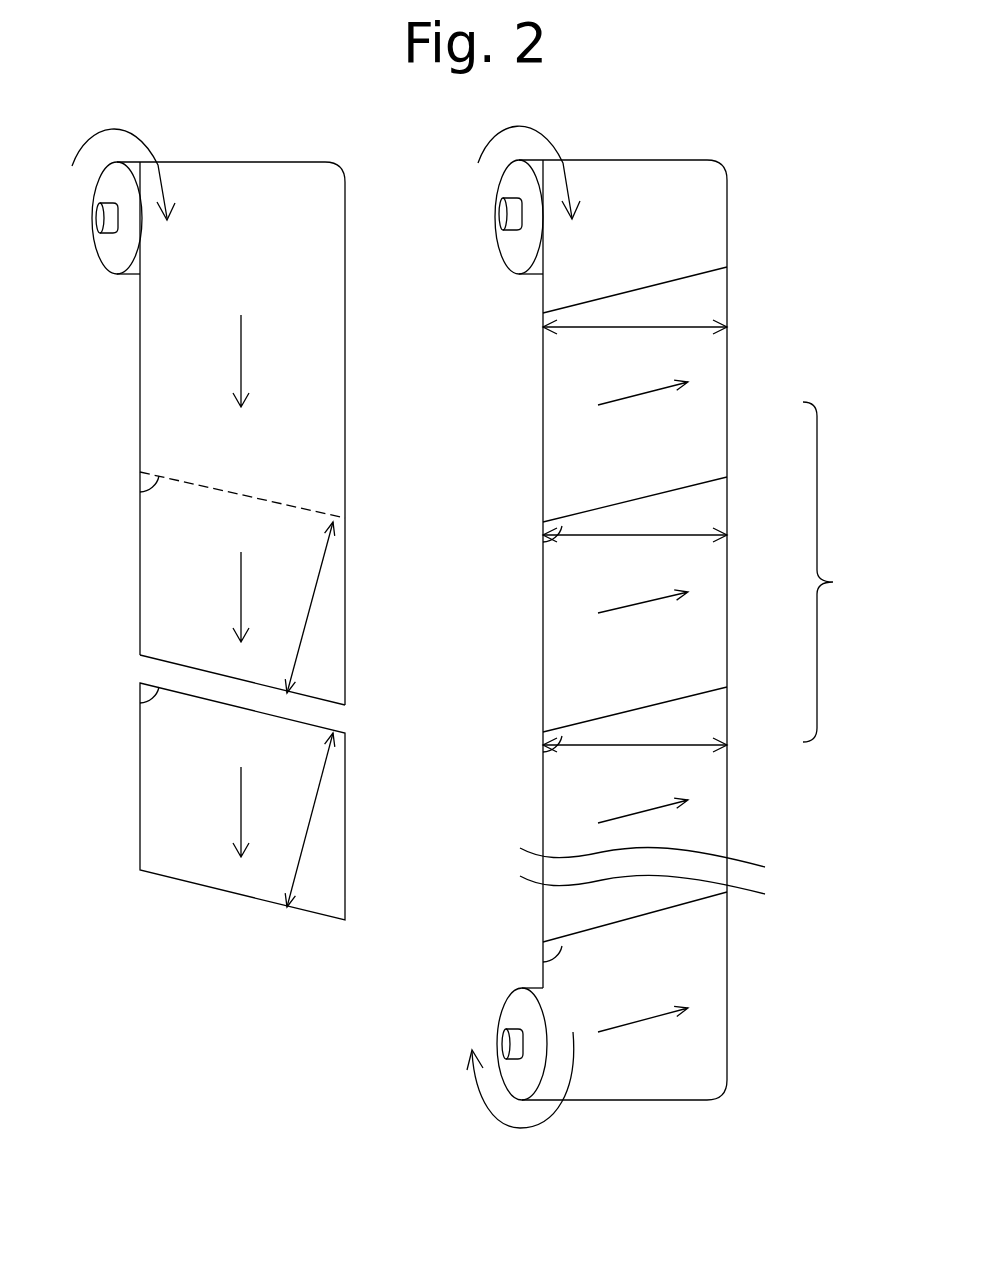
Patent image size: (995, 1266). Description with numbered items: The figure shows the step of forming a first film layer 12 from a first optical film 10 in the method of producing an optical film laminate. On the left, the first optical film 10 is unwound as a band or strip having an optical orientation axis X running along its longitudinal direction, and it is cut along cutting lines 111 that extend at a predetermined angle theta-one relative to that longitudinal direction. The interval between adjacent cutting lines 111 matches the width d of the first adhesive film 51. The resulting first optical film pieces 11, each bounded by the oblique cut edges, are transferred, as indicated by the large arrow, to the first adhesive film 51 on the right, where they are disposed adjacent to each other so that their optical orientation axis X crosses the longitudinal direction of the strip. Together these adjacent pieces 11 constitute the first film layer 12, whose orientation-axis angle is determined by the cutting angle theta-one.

The first optical film 10 is at (213, 197).
The first optical film pieces 11 is at (173, 807).
The cutting lines 111 is at (288, 507).
The first film layer 12 is at (836, 572).
The first adhesive film 51 is at (618, 197).